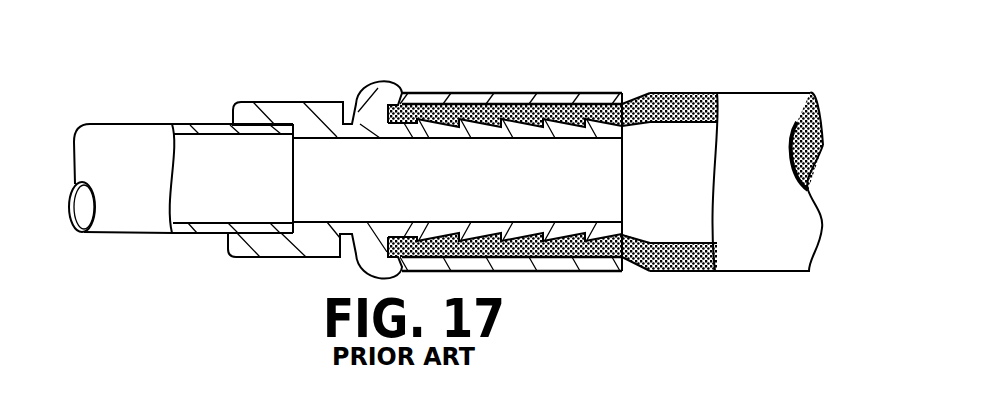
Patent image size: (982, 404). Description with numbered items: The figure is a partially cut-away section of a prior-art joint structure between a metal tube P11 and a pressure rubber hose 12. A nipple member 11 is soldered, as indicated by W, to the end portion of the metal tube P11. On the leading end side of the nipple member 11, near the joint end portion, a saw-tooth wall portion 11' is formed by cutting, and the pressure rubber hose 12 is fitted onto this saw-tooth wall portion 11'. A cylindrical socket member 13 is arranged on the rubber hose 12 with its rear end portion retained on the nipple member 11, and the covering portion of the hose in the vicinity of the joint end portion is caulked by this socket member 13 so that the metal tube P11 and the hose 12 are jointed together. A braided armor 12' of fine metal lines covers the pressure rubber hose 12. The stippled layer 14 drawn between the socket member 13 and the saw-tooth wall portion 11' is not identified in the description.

The metal tube P11 is at (140, 138).
The solder W is at (254, 101).
The nipple member 11 is at (347, 161).
The cylindrical socket member 13 is at (423, 92).
The hose inner layer (stippled) 14 is at (475, 97).
The saw-tooth wall portion 11' is at (505, 153).
The braided armor 12' is at (612, 153).
The pressure rubber hose 12 is at (736, 153).